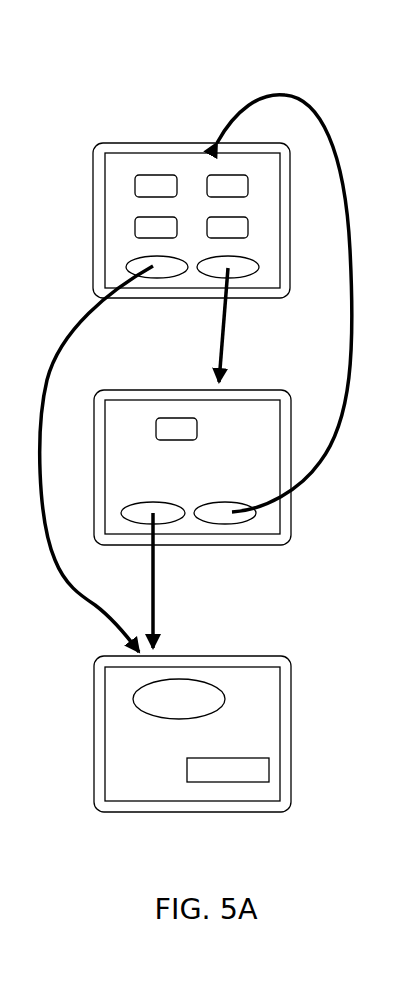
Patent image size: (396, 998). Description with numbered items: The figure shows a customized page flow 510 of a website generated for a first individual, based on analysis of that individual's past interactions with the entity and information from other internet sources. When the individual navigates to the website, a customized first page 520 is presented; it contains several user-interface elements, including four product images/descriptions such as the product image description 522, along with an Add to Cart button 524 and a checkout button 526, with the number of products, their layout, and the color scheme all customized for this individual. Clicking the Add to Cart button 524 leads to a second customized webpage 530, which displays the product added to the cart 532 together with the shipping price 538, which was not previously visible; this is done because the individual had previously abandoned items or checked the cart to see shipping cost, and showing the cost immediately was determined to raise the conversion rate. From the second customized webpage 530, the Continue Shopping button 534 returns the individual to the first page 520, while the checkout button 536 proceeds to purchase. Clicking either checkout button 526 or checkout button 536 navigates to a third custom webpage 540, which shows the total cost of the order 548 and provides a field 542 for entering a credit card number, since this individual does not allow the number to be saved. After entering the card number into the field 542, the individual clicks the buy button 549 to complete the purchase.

The customized page flow 510 is at (138, 95).
The first page 520 is at (110, 158).
The product image description 522 is at (148, 186).
The Add to Cart button 524 is at (247, 271).
The checkout button 526 is at (128, 270).
The second customized webpage 530 is at (141, 417).
The product added to the cart 532 is at (176, 418).
The Continue Shopping button 534 is at (247, 523).
The checkout button 536 is at (138, 505).
The shipping price 538 is at (240, 437).
The third custom webpage 540 is at (119, 707).
The field 542 is at (237, 757).
The total cost of the order 548 is at (262, 708).
The buy button 549 is at (195, 680).